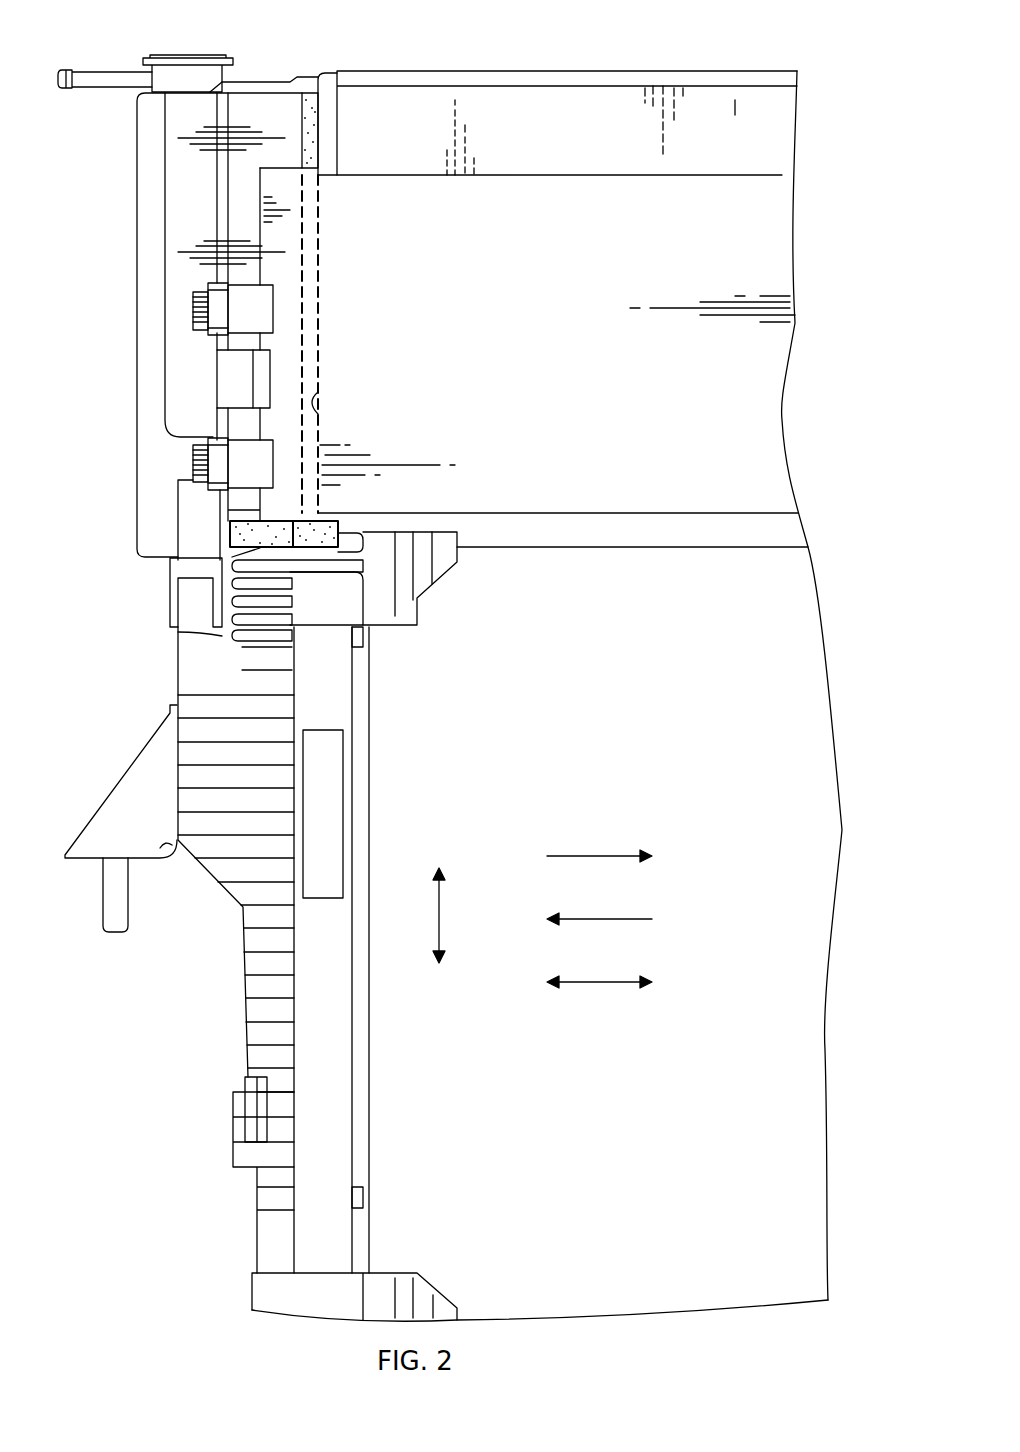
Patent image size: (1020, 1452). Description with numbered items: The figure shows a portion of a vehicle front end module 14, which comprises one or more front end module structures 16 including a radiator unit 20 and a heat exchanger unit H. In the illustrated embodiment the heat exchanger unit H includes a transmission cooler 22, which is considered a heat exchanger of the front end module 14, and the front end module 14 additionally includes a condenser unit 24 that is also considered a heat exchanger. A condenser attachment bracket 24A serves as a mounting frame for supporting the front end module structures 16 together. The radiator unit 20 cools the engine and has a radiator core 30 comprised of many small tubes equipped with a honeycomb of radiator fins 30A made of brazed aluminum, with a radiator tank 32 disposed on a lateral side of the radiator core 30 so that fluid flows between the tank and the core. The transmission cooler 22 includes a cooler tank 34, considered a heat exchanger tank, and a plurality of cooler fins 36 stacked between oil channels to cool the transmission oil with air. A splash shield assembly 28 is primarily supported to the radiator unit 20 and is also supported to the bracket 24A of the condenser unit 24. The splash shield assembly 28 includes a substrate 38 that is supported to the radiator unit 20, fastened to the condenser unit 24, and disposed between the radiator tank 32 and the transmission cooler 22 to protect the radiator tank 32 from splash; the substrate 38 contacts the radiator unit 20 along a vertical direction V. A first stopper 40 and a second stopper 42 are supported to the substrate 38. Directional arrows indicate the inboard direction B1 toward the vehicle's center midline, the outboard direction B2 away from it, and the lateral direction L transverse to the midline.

The front end module 14 is at (556, 50).
The front end module structures 16 is at (96, 584).
The radiator unit 20 is at (369, 52).
The transmission cooler 22 is at (752, 168).
The condenser unit 24 is at (678, 548).
The condenser attachment bracket 24A is at (383, 610).
The splash shield assembly 28 is at (104, 176).
The radiator core 30 is at (669, 48).
The radiator fins 30A is at (738, 108).
The radiator tank 32 is at (258, 83).
The cooler tank 34 is at (287, 296).
The cooler fins 36 is at (622, 176).
The substrate 38 is at (150, 306).
The first stopper 40 is at (255, 533).
The second stopper 42 is at (320, 410).
The heat exchanger unit H is at (770, 460).
The vertical direction V is at (440, 920).
The lateral direction L is at (600, 982).
The inboard direction B1 is at (594, 856).
The outboard direction B2 is at (602, 919).